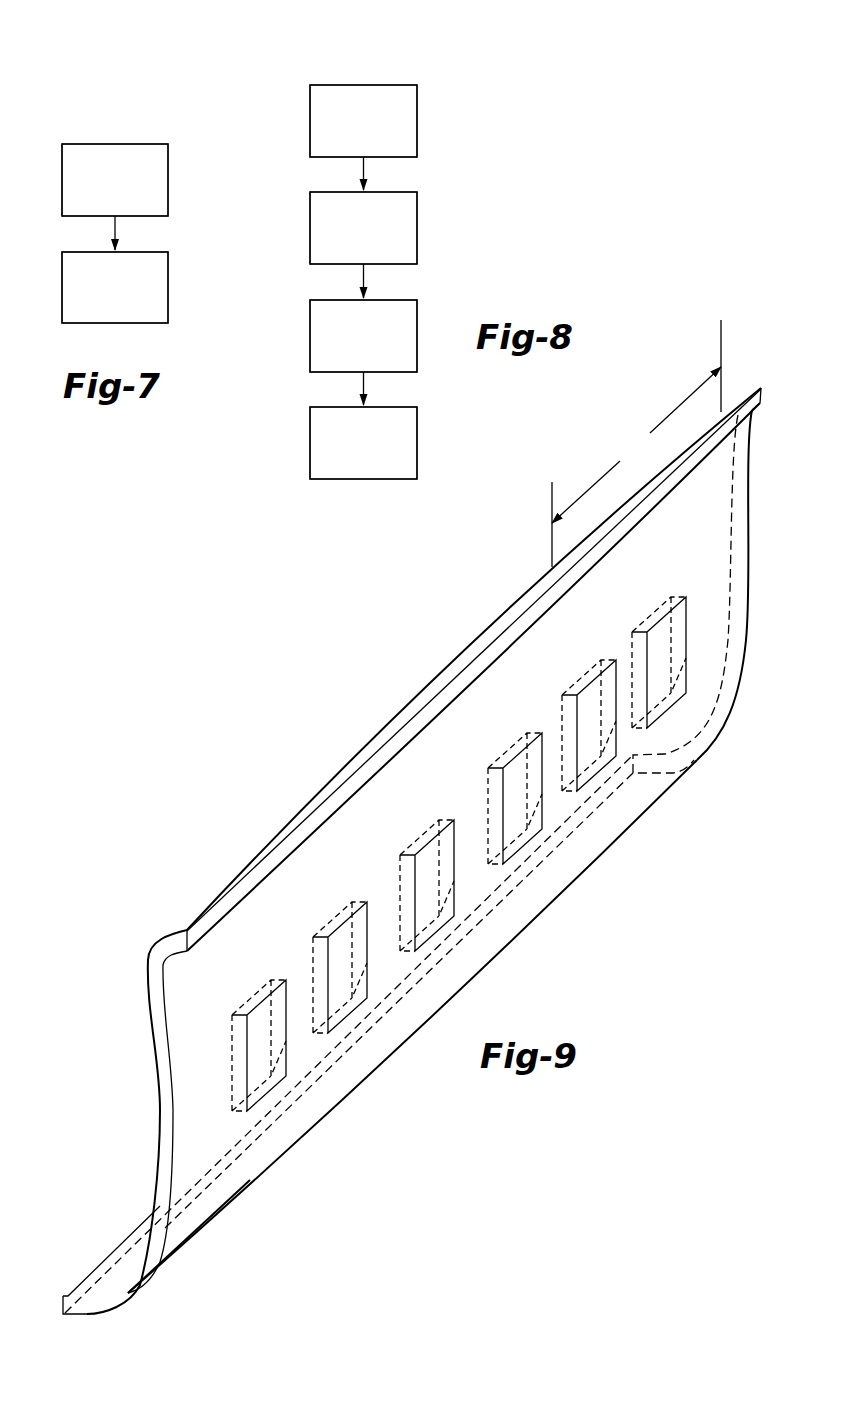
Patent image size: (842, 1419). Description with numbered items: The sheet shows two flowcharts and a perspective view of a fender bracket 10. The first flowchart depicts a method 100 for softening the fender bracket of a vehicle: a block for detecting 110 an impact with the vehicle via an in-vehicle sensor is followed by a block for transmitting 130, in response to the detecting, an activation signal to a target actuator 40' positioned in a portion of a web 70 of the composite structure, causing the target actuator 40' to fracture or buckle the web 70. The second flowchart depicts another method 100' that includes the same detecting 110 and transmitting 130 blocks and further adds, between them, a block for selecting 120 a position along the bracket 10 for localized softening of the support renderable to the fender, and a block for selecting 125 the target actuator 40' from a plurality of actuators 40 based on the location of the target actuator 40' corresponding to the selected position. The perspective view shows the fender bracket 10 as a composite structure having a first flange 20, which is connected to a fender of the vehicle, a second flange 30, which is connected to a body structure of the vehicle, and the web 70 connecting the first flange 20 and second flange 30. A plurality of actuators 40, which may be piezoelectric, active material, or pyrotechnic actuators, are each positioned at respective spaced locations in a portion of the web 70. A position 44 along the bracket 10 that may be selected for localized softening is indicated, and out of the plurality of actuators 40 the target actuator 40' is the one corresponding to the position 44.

In FIG. 7, the method 100 is at (96, 200).
In FIG. 8, the method 100' is at (345, 249).
In FIG. 7, the detecting block 110 is at (126, 196).
In FIG. 8, the detecting block 110 is at (374, 135).
In FIG. 8, the position selecting block 120 is at (374, 242).
In FIG. 8, the actuator selecting block 125 is at (374, 350).
In FIG. 7, the transmitting block 130 is at (126, 304).
In FIG. 8, the transmitting block 130 is at (374, 457).
In FIG. 9, the fender bracket 10 is at (411, 651).
In FIG. 9, the first flange 20 is at (250, 858).
In FIG. 9, the second flange 30 is at (84, 1310).
In FIG. 9, the actuators 40 is at (459, 838).
In FIG. 9, the target actuator 40' is at (583, 708).
In FIG. 9, the position 44 is at (636, 443).
In FIG. 9, the web 70 is at (167, 1062).